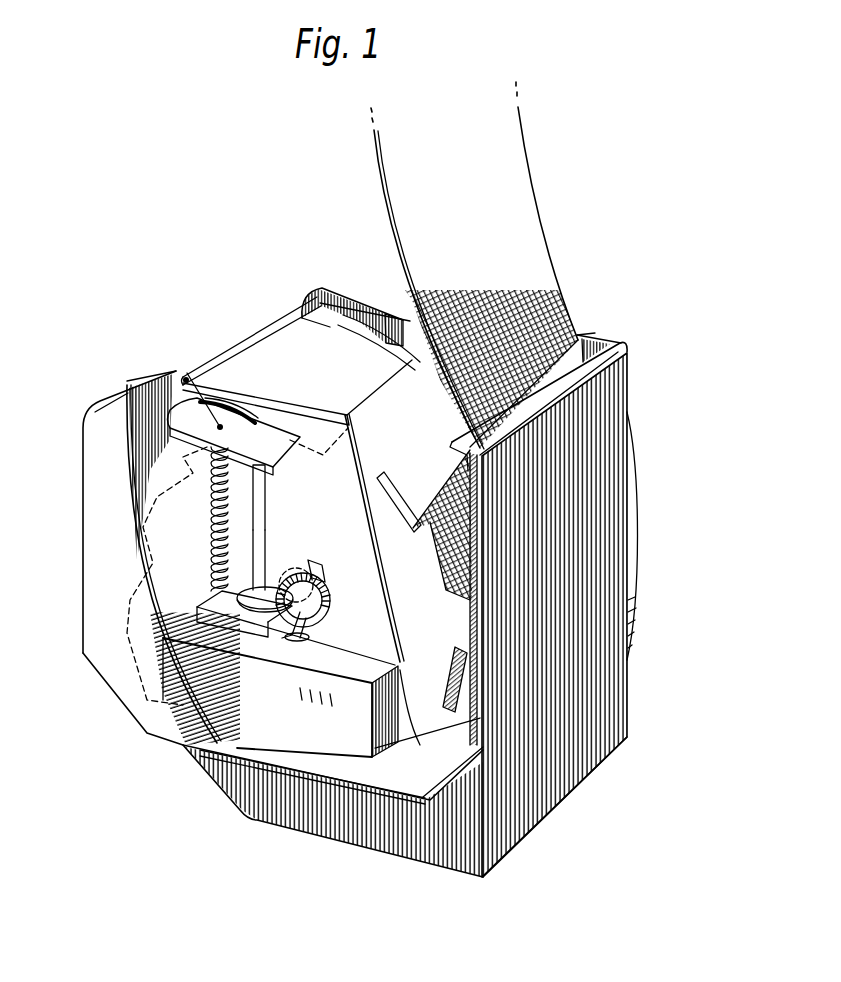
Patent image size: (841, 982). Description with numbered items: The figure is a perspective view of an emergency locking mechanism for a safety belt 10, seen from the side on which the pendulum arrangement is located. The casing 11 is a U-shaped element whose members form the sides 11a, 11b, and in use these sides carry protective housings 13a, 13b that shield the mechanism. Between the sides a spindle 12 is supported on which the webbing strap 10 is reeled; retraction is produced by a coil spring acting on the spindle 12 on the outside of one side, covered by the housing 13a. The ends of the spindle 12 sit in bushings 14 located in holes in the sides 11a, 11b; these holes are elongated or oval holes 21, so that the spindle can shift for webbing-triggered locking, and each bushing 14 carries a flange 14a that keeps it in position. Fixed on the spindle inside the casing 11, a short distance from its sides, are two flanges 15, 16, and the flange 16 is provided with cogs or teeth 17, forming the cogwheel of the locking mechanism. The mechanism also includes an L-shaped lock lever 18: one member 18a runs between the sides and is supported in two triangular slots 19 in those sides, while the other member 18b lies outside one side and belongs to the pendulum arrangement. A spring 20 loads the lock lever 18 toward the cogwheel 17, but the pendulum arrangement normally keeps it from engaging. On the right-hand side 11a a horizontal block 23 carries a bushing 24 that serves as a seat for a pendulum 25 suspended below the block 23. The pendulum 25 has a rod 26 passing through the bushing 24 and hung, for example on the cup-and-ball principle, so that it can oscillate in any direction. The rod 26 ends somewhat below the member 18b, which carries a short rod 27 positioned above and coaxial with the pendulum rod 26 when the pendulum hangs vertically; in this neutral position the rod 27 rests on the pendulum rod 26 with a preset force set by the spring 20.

The safety belt 10 is at (528, 218).
The casing 11 is at (630, 446).
The casing side 11a is at (187, 373).
The casing side 11b is at (592, 338).
The spindle 12 is at (325, 602).
The protective housing 13a is at (634, 532).
The protective housing 13b is at (120, 398).
The bushing 14 is at (317, 588).
The bushing flange 14a is at (281, 565).
The flange 15 is at (415, 373).
The flange 16 is at (413, 611).
The cogs or teeth 17 is at (372, 488).
The lock lever 18 is at (265, 347).
The lock lever member 18a is at (346, 300).
The lock lever member 18b is at (193, 403).
The triangular slot 19 is at (382, 296).
The spring 20 is at (216, 487).
The oval hole 21 is at (317, 565).
The horizontal block 23 is at (240, 622).
The bushing 24 is at (238, 617).
The pendulum 25 is at (253, 693).
The pendulum rod 26 is at (260, 545).
The short rod 27 is at (267, 478).